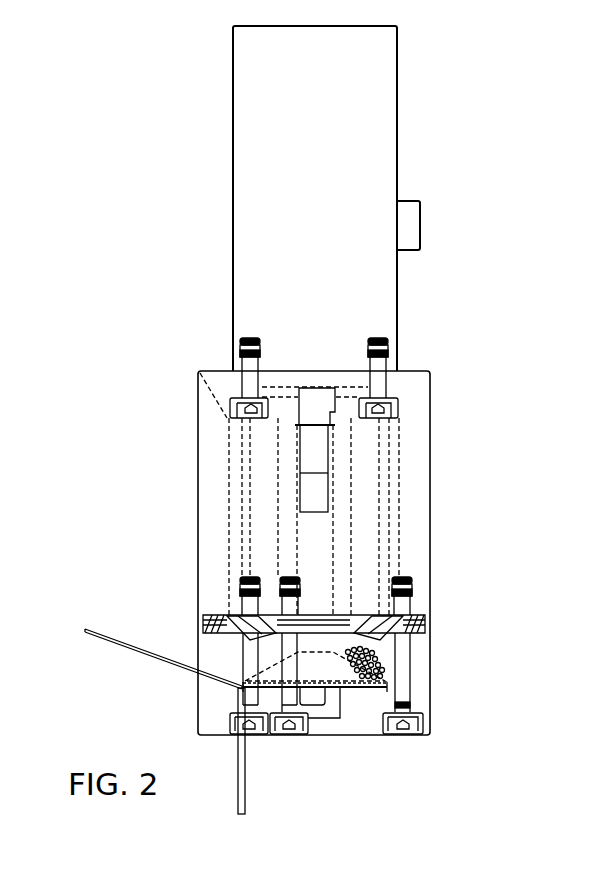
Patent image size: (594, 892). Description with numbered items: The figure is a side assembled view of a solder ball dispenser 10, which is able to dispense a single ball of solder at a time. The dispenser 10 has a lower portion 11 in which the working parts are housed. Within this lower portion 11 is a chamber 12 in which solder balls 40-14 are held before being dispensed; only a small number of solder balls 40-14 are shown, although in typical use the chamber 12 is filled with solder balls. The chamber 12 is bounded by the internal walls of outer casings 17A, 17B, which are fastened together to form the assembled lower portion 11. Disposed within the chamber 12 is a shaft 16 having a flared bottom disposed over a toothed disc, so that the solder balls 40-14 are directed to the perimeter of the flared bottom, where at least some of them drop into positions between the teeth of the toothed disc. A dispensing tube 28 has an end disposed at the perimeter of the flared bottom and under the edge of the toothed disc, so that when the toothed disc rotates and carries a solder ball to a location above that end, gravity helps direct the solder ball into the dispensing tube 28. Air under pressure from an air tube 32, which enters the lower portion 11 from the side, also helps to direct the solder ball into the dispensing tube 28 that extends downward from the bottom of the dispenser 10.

The solder ball dispenser 10 is at (152, 321).
The lower portion 11 is at (503, 372).
The chamber 12 is at (372, 485).
The shaft 16 is at (328, 551).
The outer casing 17A is at (429, 399).
The outer casing 17B is at (429, 696).
The dispensing tube 28 is at (245, 778).
The air tube 32 is at (103, 632).
The solder balls 40-14 is at (376, 657).